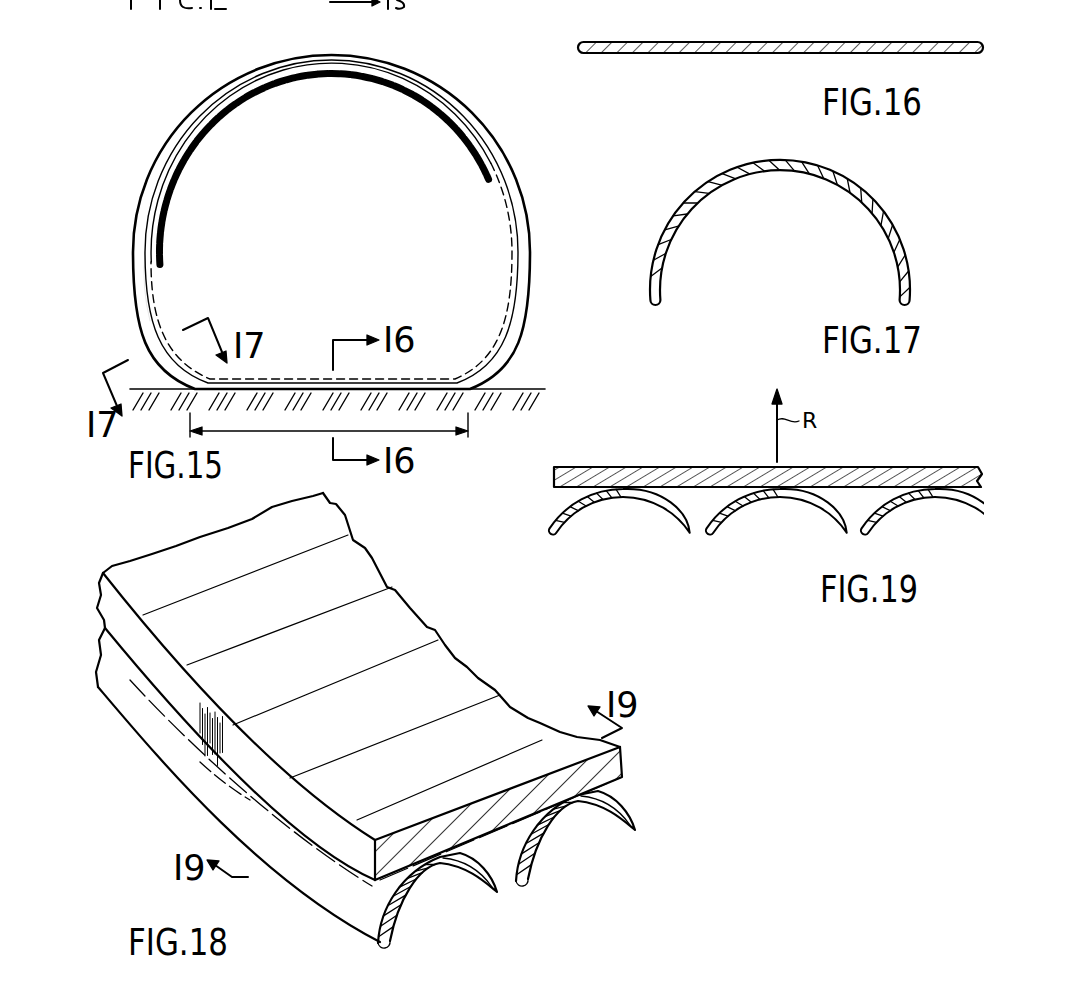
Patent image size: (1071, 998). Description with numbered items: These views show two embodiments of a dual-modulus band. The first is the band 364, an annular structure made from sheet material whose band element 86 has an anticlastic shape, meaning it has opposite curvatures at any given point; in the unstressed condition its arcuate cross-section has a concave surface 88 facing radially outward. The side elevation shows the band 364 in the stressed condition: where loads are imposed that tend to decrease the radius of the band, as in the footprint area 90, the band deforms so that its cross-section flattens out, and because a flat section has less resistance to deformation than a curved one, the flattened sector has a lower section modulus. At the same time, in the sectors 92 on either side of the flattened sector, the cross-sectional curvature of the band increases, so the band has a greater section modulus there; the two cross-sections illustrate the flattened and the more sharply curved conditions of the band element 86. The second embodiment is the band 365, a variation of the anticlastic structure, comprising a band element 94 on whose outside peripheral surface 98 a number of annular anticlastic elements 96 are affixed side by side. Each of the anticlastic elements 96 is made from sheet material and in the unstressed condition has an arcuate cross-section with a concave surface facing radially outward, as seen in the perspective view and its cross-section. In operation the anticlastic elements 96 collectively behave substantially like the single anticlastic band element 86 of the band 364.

In FIG. 15, the band 364 is at (158, 156).
In FIG. 19, the band 365 is at (745, 496).
In FIG. 18, the band 365 is at (389, 720).
In FIG. 15, the sectors 92 is at (148, 320).
In FIG. 15, the footprint area 90 is at (296, 432).
In FIG. 16, the band element 86 is at (660, 42).
In FIG. 17, the band element 86 is at (771, 232).
In FIG. 17, the concave surface 88 is at (678, 236).
In FIG. 19, the band element 94 is at (554, 477).
In FIG. 18, the band element 94 is at (622, 750).
In FIG. 19, the annular anticlastic elements 96 is at (556, 530).
In FIG. 18, the annular anticlastic elements 96 is at (635, 812).
In FIG. 19, the outside peripheral surface 98 is at (568, 489).
In FIG. 18, the outside peripheral surface 98 is at (613, 784).